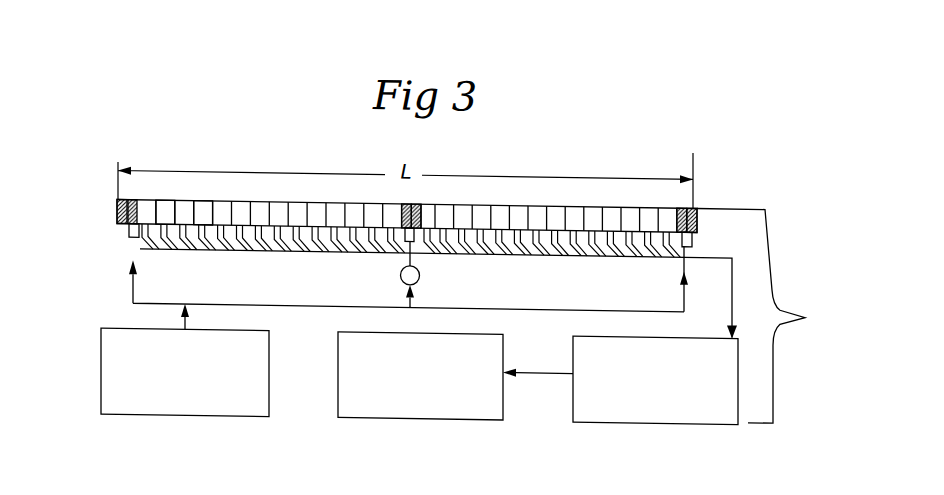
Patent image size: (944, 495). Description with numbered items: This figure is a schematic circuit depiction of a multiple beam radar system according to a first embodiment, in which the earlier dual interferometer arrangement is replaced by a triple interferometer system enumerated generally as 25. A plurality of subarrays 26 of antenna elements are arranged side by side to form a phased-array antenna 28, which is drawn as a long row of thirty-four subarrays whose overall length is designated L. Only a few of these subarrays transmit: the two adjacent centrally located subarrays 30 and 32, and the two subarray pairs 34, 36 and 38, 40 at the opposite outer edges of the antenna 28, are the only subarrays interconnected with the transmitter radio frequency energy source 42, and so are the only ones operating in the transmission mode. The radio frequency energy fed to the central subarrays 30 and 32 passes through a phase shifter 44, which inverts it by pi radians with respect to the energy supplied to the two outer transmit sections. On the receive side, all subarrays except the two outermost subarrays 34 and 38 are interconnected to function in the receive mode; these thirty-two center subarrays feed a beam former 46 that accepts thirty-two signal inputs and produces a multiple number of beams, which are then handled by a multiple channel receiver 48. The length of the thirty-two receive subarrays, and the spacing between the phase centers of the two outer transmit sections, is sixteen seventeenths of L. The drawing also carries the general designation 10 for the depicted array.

The ultrasonic transducer array 10 is at (485, 190).
The triple interferometer system 25 is at (770, 316).
The subarrays 26 is at (202, 200).
The phased-array antenna 28 is at (112, 198).
The centrally located subarray 30 is at (406, 224).
The centrally located subarray 32 is at (408, 236).
The outermost edge subarray 34 is at (118, 224).
The edge subarray 36 is at (128, 237).
The outermost edge subarray 38 is at (697, 200).
The edge subarray 40 is at (681, 200).
The transmitter radio frequency energy source 42 is at (150, 414).
The phase shifter 44 is at (418, 275).
The beam former 46 is at (677, 415).
The multiple channel receiver 48 is at (430, 414).